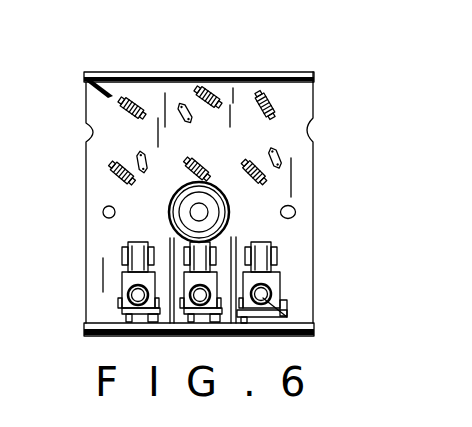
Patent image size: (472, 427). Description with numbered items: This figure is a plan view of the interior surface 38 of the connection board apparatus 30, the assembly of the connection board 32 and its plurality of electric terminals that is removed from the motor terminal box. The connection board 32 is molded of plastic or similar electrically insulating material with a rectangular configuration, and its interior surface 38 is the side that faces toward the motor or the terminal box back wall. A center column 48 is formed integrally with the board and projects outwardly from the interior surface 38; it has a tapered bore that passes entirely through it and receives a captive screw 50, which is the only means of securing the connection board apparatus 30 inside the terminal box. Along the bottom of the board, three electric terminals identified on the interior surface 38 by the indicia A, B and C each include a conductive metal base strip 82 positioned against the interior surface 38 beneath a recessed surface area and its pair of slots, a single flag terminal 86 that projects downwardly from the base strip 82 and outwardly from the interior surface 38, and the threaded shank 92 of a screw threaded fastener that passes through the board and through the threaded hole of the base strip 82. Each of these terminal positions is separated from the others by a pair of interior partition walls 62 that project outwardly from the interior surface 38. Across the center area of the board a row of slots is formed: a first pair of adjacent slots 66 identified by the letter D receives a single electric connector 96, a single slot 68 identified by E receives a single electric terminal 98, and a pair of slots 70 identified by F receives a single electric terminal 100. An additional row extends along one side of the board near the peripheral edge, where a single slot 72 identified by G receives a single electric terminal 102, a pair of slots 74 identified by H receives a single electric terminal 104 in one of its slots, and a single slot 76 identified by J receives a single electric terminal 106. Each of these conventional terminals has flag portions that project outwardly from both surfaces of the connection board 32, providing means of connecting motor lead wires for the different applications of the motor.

The connection board apparatus 30 is at (174, 58).
The connection board 32 is at (105, 198).
The interior surface 38 is at (105, 232).
The center column 48 is at (224, 213).
The screw 50 is at (208, 218).
The interior partition walls 62 is at (160, 320).
The first pair of adjacent slots 66 is at (295, 182).
The single slot 68 is at (218, 157).
The pair of slots 70 is at (92, 144).
The single slot 72 is at (287, 70).
The pair of slots 74 is at (170, 72).
The single slot 76 is at (86, 80).
The conductive metal base strip 82 is at (133, 273).
The single flag terminal 86 is at (148, 306).
The threaded shank 92 is at (126, 303).
The electric connector 96 is at (291, 156).
The electric terminal 98 is at (216, 154).
The electric terminal 100 is at (112, 175).
The electric terminal 102 is at (314, 73).
The electric terminal 104 is at (216, 90).
The electric terminal 106 is at (125, 110).